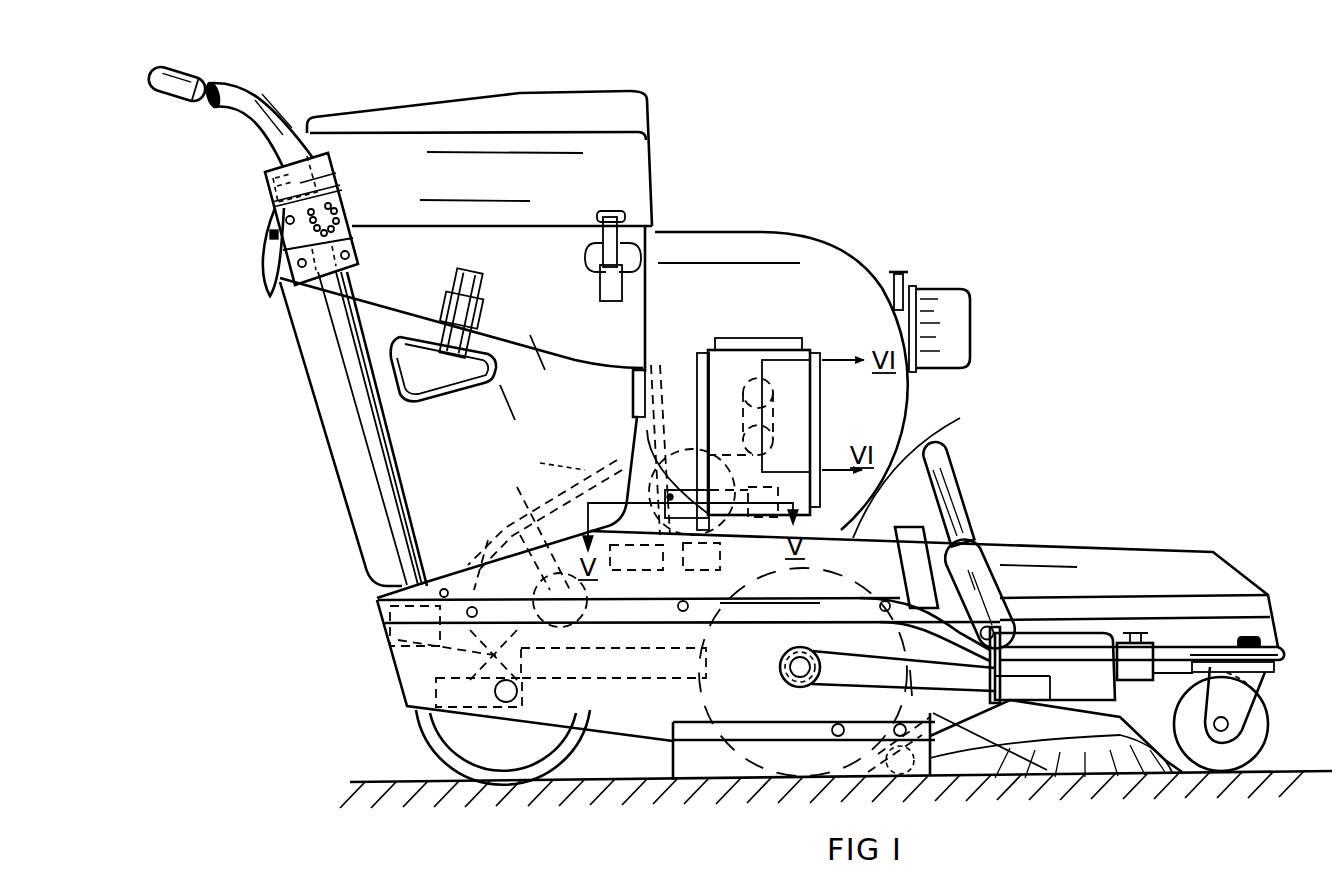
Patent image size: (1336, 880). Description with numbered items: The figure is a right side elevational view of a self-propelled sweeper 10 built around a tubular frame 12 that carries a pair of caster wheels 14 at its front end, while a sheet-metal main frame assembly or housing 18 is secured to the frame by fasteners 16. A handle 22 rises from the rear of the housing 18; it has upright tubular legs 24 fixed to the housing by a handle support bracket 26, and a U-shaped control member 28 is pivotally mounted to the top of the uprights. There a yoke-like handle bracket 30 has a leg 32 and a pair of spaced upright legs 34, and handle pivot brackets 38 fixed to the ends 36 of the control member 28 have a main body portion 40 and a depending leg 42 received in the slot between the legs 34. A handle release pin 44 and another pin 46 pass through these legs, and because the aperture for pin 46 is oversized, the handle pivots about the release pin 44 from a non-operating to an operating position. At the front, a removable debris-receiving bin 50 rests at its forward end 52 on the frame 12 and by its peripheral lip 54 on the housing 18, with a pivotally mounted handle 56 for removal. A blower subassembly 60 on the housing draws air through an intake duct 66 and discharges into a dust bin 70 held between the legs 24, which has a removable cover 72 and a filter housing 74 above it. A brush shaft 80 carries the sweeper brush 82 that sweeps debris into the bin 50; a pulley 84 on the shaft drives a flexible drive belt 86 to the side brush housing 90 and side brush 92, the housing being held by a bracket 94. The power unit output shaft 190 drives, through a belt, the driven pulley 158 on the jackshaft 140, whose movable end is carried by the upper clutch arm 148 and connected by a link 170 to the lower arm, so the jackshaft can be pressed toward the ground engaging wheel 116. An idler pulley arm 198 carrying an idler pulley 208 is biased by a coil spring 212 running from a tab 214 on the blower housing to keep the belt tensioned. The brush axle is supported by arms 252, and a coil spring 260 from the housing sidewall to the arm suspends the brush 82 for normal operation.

The self-propelled sweeper 10 is at (972, 238).
The tubular frame 12 is at (906, 618).
The caster wheels 14 is at (1260, 717).
The fasteners 16 is at (690, 604).
The main frame assembly or housing 18 is at (948, 442).
The handle 22 is at (333, 358).
The upright tubular legs 24 is at (337, 298).
The handle support bracket 26 is at (388, 640).
The control member or pivotable handle portion 28 is at (178, 104).
The handle bracket 30 is at (270, 232).
The leg 32 is at (351, 254).
The upright legs 34 is at (345, 214).
The ends 36 is at (300, 128).
The handle pivot brackets 38 is at (322, 163).
The main body portion 40 is at (286, 193).
The depending leg 42 is at (335, 187).
The handle release pin 44 is at (266, 255).
The pin 46 is at (286, 218).
The debris-receiving bin 50 is at (1128, 553).
The forward end 52 is at (1268, 637).
The peripheral flange or lip 54 is at (902, 530).
The pivotally mounted handle 56 is at (958, 498).
The blower subassembly 60 is at (803, 328).
The intake duct 66 is at (810, 393).
The dust bin 70 is at (563, 377).
The removable cover 72 is at (537, 252).
The filter housing 74 is at (527, 112).
The brush shaft 80 is at (790, 677).
The sweeper brush 82 is at (788, 760).
The pulley 84 is at (783, 668).
The flexible drive belt 86 is at (848, 670).
The side brush housing 90 is at (1082, 650).
The side brush 92 is at (1125, 777).
The bracket 94 is at (1138, 650).
The ground engaging wheel 116 is at (432, 743).
The jackshaft or countershaft 140 is at (505, 524).
The upper clutch arm or lever 148 is at (486, 556).
The driven pulley 158 is at (556, 498).
The link 170 is at (408, 665).
The drive or output shaft 190 is at (810, 431).
The idler pulley arm 198 is at (538, 463).
The idler pulley 208 is at (613, 458).
The coil spring 212 is at (632, 416).
The tab 214 is at (648, 370).
The arms 252 is at (712, 655).
The coil spring 260 is at (632, 680).